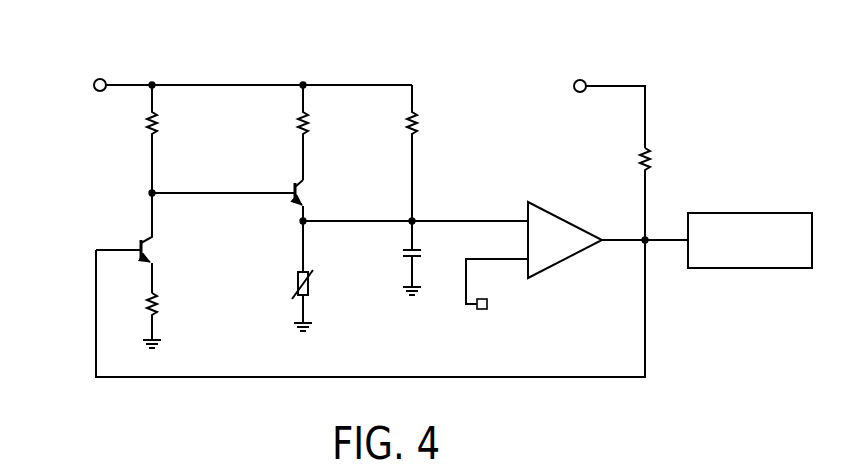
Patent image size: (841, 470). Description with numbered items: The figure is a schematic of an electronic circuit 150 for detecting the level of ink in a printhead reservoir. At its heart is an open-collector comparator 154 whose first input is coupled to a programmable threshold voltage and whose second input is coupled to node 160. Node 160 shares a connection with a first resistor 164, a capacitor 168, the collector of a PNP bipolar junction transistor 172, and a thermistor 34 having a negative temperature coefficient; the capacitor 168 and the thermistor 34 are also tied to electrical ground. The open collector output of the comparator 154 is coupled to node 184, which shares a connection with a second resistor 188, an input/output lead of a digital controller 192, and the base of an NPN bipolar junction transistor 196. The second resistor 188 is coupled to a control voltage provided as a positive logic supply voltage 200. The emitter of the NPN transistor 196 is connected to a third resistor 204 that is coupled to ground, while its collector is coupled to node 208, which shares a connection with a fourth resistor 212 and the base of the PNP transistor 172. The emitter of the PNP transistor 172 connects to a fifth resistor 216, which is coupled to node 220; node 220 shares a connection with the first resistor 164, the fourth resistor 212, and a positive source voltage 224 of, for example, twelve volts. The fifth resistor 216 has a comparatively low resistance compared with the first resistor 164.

The electronic circuit 150 is at (707, 74).
The open-collector comparator 154 is at (560, 213).
The node 160 is at (414, 220).
The first resistor 164 is at (423, 122).
The capacitor 168 is at (400, 252).
The PNP bipolar junction transistor 172 is at (313, 194).
The node 184 is at (647, 239).
The second resistor 188 is at (656, 158).
The digital controller 192 is at (718, 269).
The NPN bipolar junction transistor 196 is at (158, 250).
The positive logic supply voltage 200 is at (582, 80).
The third resistor 204 is at (162, 303).
The node 208 is at (150, 193).
The fourth resistor 212 is at (162, 124).
The fifth resistor 216 is at (314, 122).
The node 220 is at (304, 83).
The positive source voltage 224 is at (94, 82).
The thermistor 34 is at (313, 289).